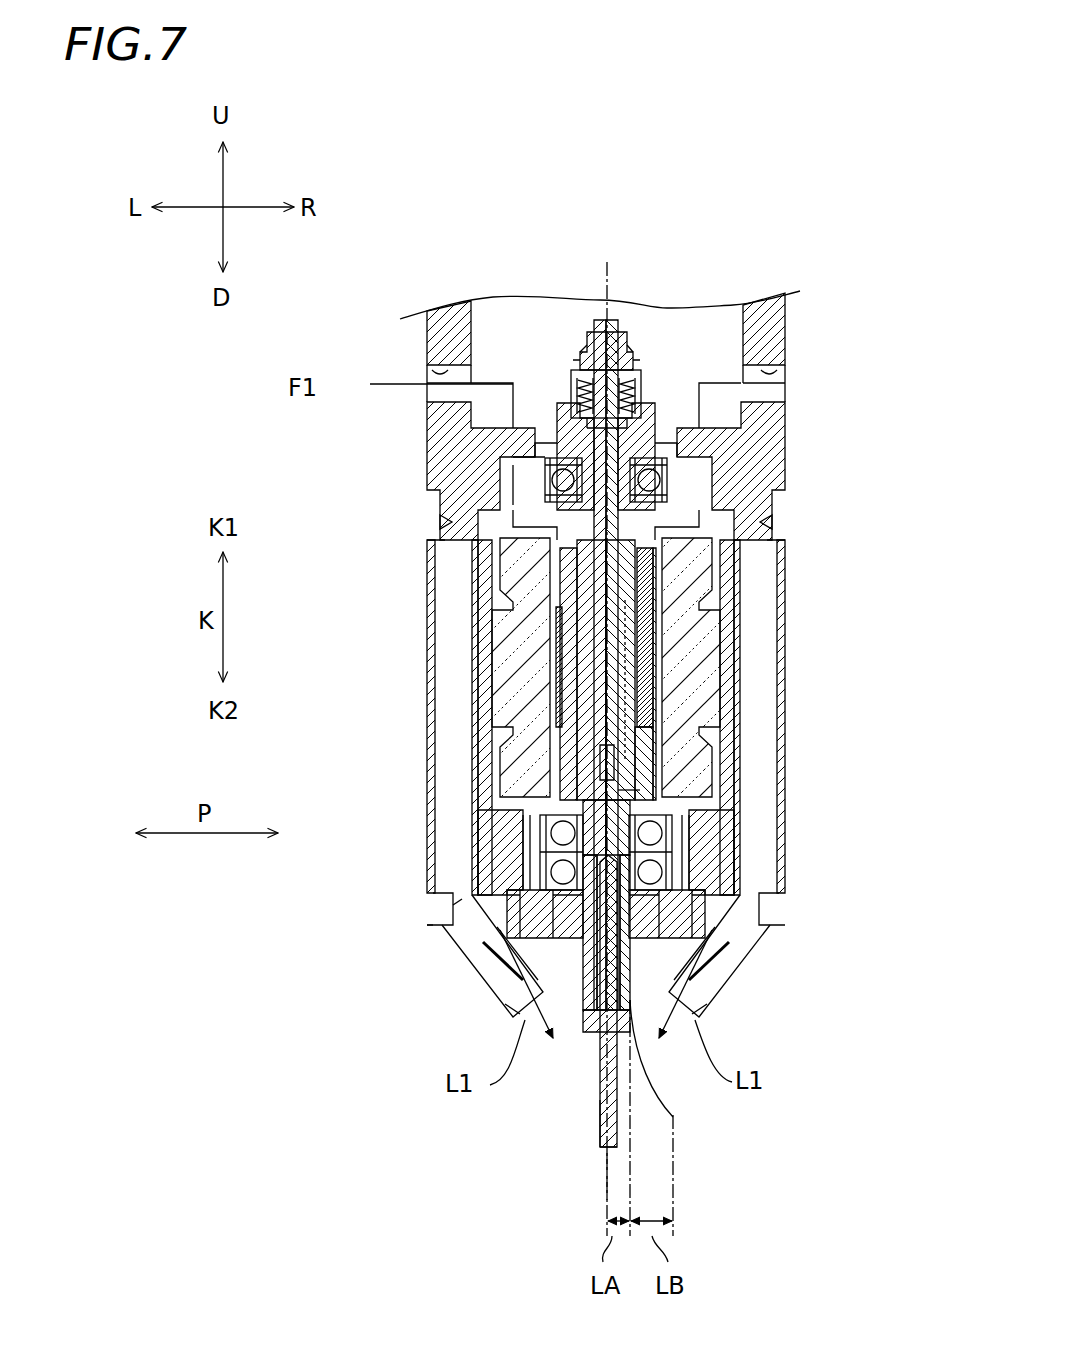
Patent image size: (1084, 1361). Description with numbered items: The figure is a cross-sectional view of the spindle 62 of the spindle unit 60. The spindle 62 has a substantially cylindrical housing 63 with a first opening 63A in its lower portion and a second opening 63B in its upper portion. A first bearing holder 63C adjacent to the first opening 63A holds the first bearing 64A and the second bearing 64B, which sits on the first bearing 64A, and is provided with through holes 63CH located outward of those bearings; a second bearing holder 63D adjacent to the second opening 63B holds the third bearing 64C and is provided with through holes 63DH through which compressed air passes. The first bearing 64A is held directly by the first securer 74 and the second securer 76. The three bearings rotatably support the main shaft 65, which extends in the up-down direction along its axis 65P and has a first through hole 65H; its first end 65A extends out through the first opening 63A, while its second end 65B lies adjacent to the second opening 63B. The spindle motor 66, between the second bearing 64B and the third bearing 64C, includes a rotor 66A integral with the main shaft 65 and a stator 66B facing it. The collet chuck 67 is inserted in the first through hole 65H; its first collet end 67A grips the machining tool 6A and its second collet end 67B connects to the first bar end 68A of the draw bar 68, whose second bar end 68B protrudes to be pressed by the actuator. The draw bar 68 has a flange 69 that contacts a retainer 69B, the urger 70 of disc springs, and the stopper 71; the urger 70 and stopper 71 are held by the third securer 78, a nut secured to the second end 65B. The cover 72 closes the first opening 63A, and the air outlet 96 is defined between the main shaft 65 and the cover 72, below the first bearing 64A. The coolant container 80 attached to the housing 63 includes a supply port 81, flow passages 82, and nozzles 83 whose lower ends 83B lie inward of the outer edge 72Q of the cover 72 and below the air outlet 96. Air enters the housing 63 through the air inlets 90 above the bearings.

The spindle unit 60 is at (824, 222).
The spindle 62 is at (822, 462).
The housing 63 is at (778, 515).
The first opening 63A is at (520, 876).
The second opening 63B is at (500, 322).
The first bearing holder 63C is at (695, 850).
The through holes 63CH is at (490, 838).
The second bearing holder 63D is at (450, 492).
The through holes 63DH is at (440, 522).
The first bearing 64A is at (662, 888).
The second bearing 64B is at (672, 818).
The third bearing 64C is at (660, 455).
The main shaft 65 is at (640, 592).
The first end 65A is at (673, 1117).
The second end 65B is at (650, 418).
The first through hole 65H is at (656, 562).
The axis 65P is at (605, 1178).
The spindle motor 66 is at (655, 650).
The rotor 66A is at (559, 690).
The stator 66B is at (520, 630).
The collet chuck 67 is at (640, 960).
The first collet end 67A is at (598, 1040).
The second collet end 67B is at (630, 745).
The draw bar 68 is at (645, 640).
The first bar end 68A is at (640, 790).
The second bar end 68B is at (588, 396).
The flange 69 is at (573, 390).
The retainer 69B is at (633, 380).
The urger 70 is at (641, 398).
The stopper 71 is at (540, 408).
The cover 72 is at (503, 990).
The outer edge 72Q is at (470, 912).
The first securer 74 is at (586, 1022).
The second securer 76 is at (478, 930).
The third securer 78 is at (700, 411).
The coolant container 80 is at (426, 925).
The supply port 81 is at (476, 566).
The flow passages 82 is at (784, 690).
The nozzles 83 is at (487, 977).
The lower ends 83B is at (512, 1018).
The air inlets 90 is at (432, 372).
The air outlet 96 is at (665, 958).
The machining tool 6A is at (598, 1132).